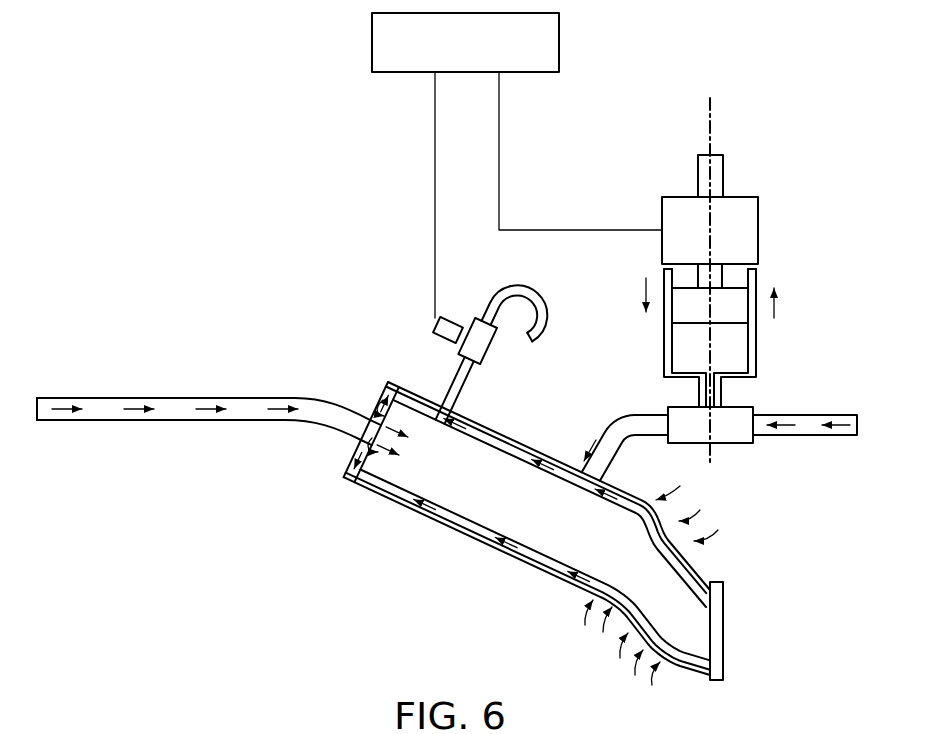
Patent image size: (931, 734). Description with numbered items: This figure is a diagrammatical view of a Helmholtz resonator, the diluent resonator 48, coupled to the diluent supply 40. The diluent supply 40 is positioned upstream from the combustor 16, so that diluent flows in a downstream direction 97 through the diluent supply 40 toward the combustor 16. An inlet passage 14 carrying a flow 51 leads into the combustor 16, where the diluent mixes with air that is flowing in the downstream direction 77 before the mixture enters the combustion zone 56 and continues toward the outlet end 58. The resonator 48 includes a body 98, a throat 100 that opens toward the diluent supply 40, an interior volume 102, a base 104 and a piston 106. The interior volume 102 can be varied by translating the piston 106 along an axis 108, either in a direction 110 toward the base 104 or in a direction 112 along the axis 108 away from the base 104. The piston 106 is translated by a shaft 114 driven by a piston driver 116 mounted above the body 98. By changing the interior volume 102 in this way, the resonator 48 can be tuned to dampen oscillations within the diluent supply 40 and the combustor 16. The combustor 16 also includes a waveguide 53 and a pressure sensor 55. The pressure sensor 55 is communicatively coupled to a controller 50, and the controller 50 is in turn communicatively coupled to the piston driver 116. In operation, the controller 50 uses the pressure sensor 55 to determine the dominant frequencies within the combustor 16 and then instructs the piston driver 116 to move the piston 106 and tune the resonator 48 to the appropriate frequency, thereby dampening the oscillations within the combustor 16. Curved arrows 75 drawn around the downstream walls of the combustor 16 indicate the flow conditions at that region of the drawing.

The exhaust inlet pipe 14 is at (80, 397).
The exhaust gas flow 51 is at (130, 408).
The combustor 16 is at (418, 463).
The combustion zone 56 is at (485, 482).
The downstream direction 77 is at (478, 420).
The waveguide 53 is at (455, 385).
The pressure sensor 55 is at (435, 327).
The controller 50 is at (560, 42).
The diluent resonator 48 is at (661, 162).
The axis 108 is at (709, 118).
The shaft 114 is at (724, 163).
The piston driver 116 is at (740, 212).
The piston 106 is at (735, 296).
The body 98 is at (740, 372).
The interior volume 102 is at (693, 345).
The throat 100 is at (699, 388).
The base 104 is at (735, 380).
The direction 110 is at (640, 290).
The direction 112 is at (776, 312).
The diluent supply 40 is at (803, 437).
The downstream direction 97 is at (838, 424).
The outlet flange 58 is at (724, 568).
The heat transfer arrows 75 is at (700, 516).